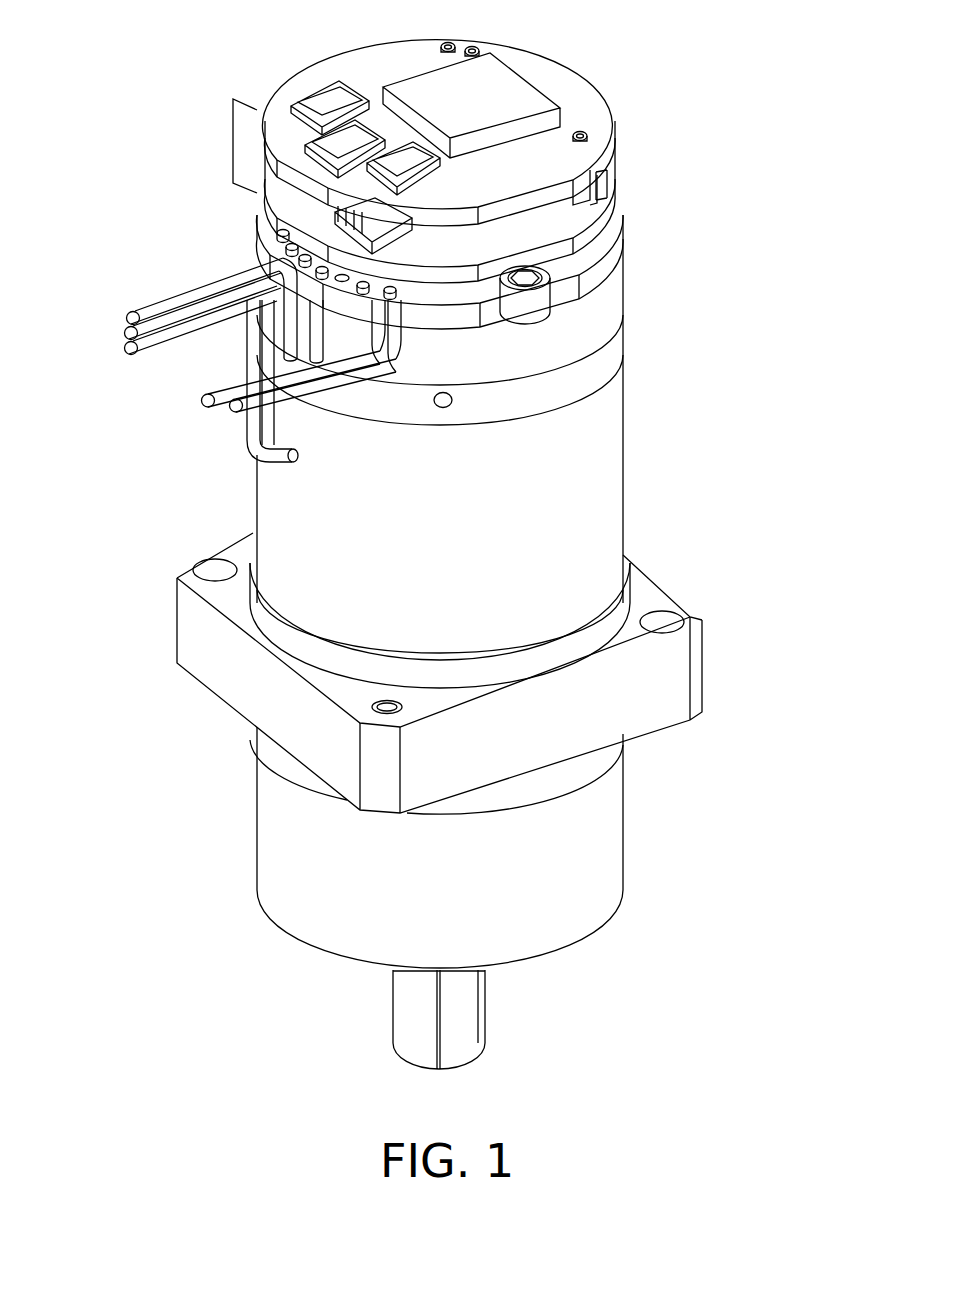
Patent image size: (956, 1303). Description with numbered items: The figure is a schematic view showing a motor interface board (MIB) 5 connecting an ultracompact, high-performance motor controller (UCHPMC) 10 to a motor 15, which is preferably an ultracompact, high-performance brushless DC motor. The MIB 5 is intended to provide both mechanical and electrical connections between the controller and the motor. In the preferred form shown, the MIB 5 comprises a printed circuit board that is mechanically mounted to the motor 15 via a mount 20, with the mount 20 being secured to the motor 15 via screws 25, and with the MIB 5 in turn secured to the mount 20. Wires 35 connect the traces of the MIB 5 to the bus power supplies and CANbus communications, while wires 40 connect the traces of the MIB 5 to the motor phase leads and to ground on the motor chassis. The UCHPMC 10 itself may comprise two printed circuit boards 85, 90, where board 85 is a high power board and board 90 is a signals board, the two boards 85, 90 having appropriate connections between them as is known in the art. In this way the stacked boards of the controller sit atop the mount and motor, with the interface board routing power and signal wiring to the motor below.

The ultracompact, high-performance motor controller (UCHPMC) 10 is at (233, 142).
The printed circuit board 85 is at (540, 72).
The printed circuit board 90 is at (566, 223).
The motor interface board (MIB) 5 is at (591, 277).
The screws 25 is at (532, 302).
The mount 20 is at (589, 319).
The motor 15 is at (586, 500).
The wires 35 is at (183, 293).
The wires 40 is at (260, 449).